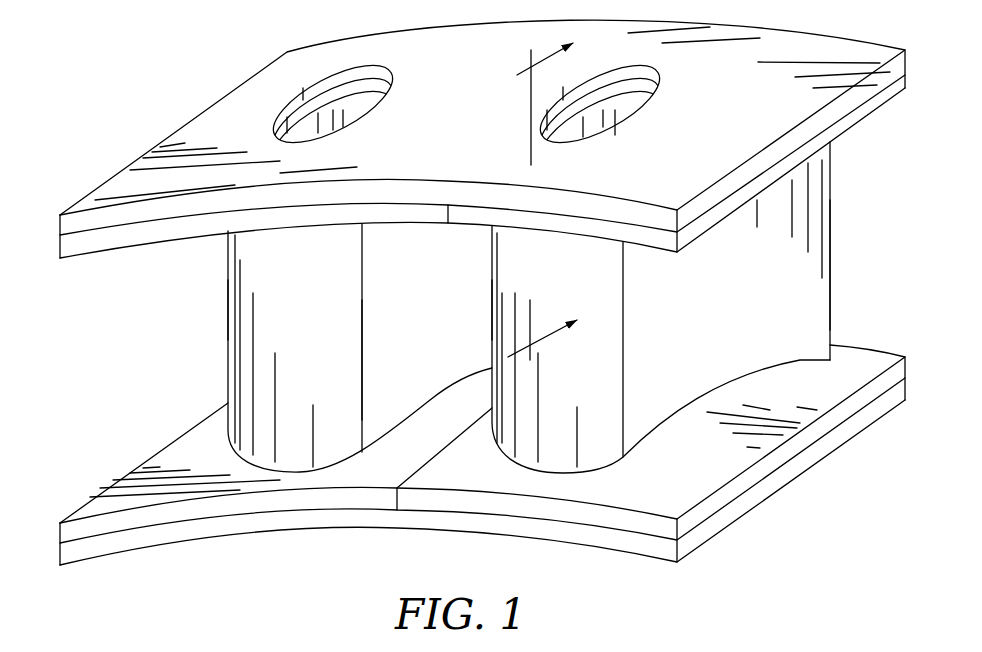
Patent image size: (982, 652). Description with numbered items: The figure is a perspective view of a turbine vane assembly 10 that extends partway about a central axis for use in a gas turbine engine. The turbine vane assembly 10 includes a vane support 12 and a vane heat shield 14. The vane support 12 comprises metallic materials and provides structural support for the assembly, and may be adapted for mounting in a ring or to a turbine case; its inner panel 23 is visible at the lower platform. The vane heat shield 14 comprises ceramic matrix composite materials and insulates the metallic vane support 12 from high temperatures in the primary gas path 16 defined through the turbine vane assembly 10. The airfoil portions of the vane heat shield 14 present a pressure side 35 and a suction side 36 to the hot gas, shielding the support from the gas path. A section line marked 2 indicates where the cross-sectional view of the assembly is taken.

The turbine vane assembly 10 is at (140, 68).
The vane support 12 is at (58, 217).
The vane heat shield 14 is at (200, 270).
The primary gas path 16 is at (203, 392).
The inner panel 23 is at (272, 541).
The pressure side 35 is at (395, 322).
The suction side 36 is at (227, 313).
The section line 2- 2 is at (532, 207).